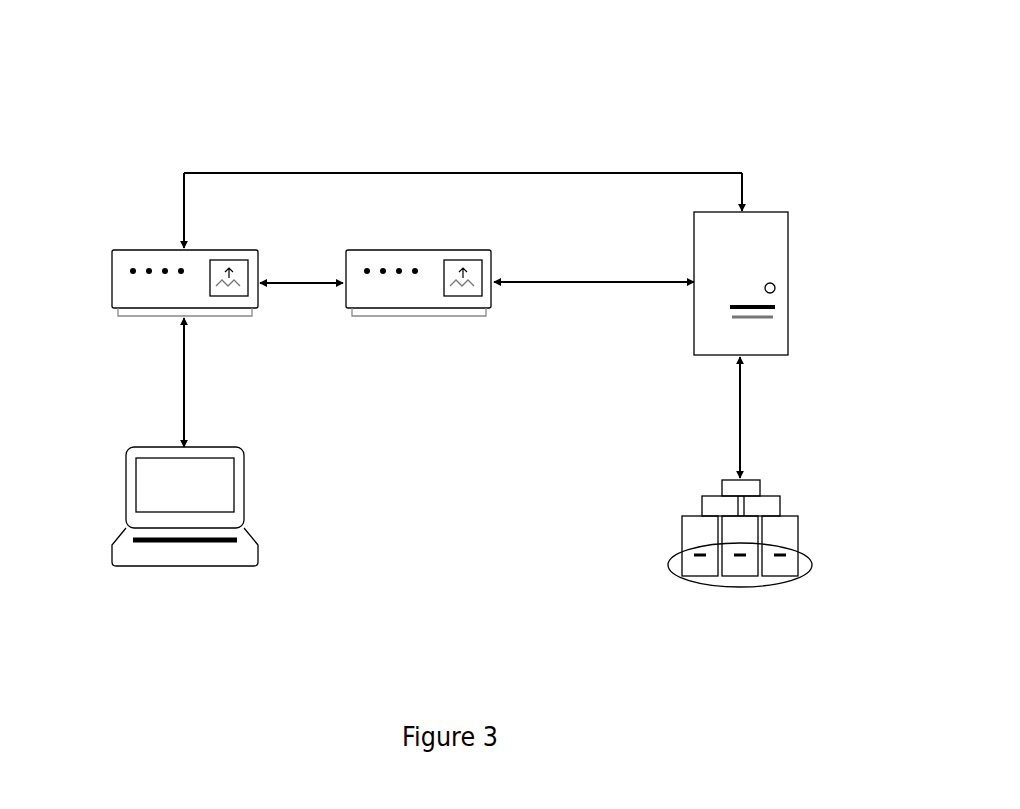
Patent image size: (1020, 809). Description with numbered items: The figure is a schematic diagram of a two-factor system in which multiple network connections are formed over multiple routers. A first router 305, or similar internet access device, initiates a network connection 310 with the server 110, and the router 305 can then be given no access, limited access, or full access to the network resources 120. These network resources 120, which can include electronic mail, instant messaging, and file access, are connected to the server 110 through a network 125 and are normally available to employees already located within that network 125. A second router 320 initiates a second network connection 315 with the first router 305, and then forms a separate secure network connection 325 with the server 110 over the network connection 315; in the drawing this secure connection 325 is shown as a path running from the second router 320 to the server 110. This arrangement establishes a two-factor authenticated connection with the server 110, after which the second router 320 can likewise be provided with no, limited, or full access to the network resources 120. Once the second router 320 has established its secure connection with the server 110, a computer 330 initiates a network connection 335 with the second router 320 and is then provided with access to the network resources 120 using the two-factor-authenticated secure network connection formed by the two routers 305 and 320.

The server 110 is at (790, 268).
The network resources 120 is at (798, 542).
The network 125 is at (745, 412).
The first router 305 is at (452, 312).
The network connection 310 is at (626, 282).
The second network connection 315 is at (313, 283).
The second router 320 is at (145, 257).
The secure network connection 325 is at (267, 173).
The computer 330 is at (203, 566).
The network connection 335 is at (184, 393).